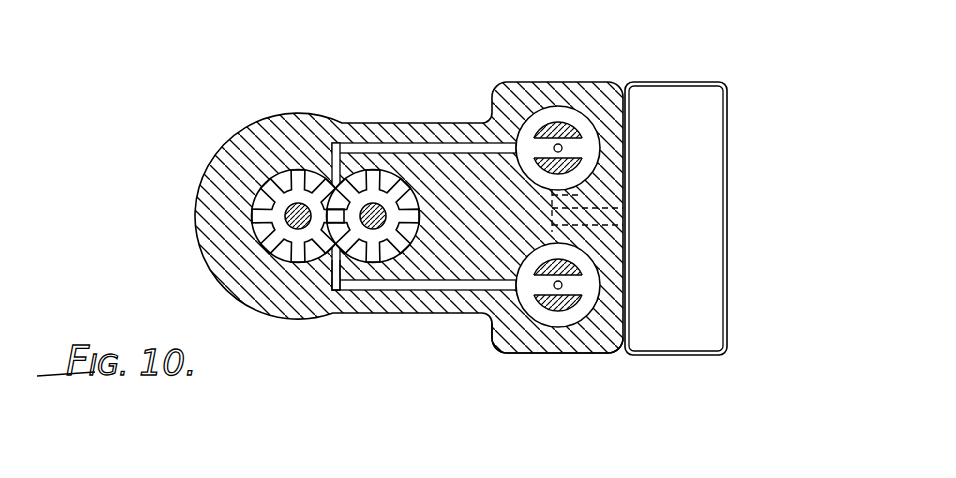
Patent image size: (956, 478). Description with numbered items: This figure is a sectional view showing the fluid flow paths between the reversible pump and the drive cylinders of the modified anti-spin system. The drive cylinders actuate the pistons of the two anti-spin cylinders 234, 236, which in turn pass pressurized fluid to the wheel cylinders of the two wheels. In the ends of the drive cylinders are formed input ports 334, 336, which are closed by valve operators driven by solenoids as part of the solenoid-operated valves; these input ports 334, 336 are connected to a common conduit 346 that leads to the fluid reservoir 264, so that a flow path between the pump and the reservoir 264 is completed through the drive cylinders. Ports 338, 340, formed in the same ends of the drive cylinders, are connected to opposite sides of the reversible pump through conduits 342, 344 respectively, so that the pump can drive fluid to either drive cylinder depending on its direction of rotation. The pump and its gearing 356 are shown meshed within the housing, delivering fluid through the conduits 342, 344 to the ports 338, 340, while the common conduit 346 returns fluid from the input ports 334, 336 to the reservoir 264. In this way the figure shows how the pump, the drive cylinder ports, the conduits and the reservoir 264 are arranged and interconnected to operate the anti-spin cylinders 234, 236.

The anti-spin cylinder 234 is at (575, 64).
The anti-spin cylinder 236 is at (553, 369).
The fluid reservoir 264 is at (722, 163).
The port 334 is at (562, 148).
The port 336 is at (562, 285).
The port 338 is at (507, 145).
The port 340 is at (510, 287).
The conduit 342 is at (330, 158).
The conduit 344 is at (336, 284).
The common conduit 346 is at (606, 200).
The gear pair 356 is at (339, 88).